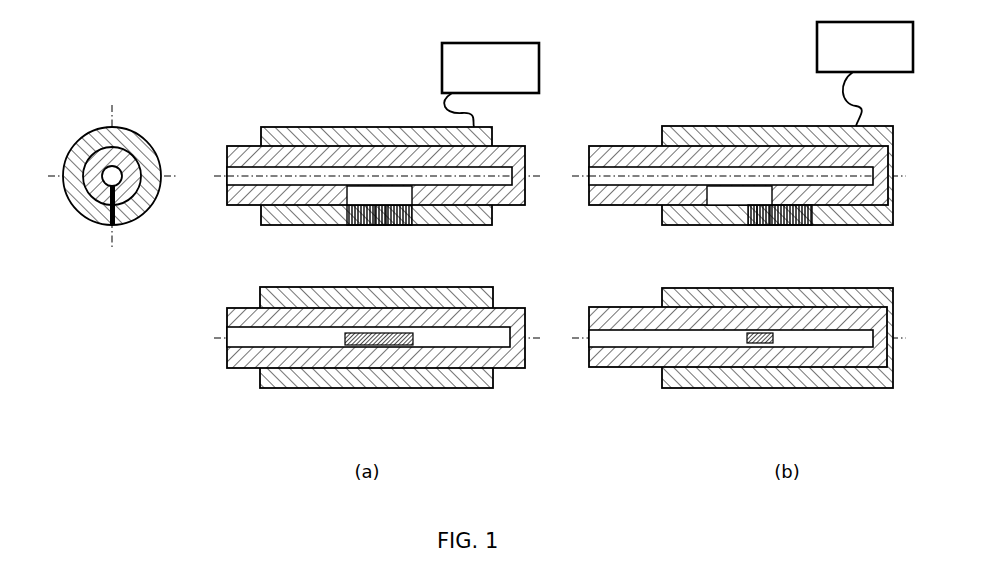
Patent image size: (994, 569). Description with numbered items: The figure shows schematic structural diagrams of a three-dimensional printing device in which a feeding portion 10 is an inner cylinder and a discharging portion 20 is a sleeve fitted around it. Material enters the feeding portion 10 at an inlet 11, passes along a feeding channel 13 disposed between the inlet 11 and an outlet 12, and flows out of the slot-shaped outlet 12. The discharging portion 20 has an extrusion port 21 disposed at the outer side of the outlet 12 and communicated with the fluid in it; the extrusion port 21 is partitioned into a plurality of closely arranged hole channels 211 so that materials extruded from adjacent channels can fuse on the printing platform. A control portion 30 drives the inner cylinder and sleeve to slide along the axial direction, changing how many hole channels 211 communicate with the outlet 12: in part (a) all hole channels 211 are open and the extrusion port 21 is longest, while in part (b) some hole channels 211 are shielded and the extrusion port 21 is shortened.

The feeding portion 10 is at (84, 148).
The inlet 11 is at (230, 178).
The outlet 12 is at (131, 220).
The feeding channel 13 is at (289, 178).
The discharging portion 20 is at (87, 222).
The extrusion port 21 is at (113, 222).
The hole channels 211 is at (793, 108).
The control portion 30 is at (441, 52).